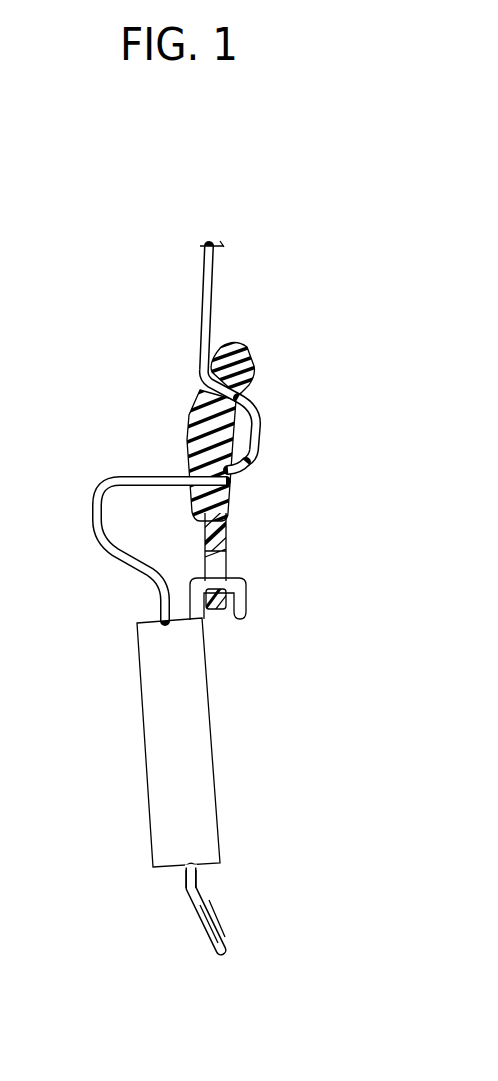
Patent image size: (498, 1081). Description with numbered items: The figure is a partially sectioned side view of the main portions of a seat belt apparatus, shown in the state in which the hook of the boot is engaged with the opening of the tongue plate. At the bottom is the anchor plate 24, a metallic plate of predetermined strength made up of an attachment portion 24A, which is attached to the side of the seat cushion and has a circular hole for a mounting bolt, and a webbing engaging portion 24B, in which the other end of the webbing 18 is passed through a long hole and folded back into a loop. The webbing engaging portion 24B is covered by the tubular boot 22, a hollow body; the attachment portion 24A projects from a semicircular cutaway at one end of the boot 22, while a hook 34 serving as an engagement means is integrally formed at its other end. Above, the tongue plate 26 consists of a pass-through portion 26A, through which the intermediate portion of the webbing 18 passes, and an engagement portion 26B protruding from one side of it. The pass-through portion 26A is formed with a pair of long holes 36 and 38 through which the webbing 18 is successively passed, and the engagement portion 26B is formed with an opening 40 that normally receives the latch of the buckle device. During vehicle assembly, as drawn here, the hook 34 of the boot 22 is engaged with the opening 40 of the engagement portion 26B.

The webbing 18 is at (201, 281).
The tongue plate 26 is at (243, 347).
The pass-through portion 26A is at (185, 427).
The engagement portion 26B is at (228, 530).
The long hole 36 is at (258, 406).
The long hole 38 is at (240, 468).
The opening 40 is at (228, 560).
The hook 34 is at (246, 607).
The boot 22 is at (152, 728).
The anchor plate 24 is at (227, 937).
The attachment portion 24A is at (207, 926).
The webbing engaging portion 24B is at (185, 877).